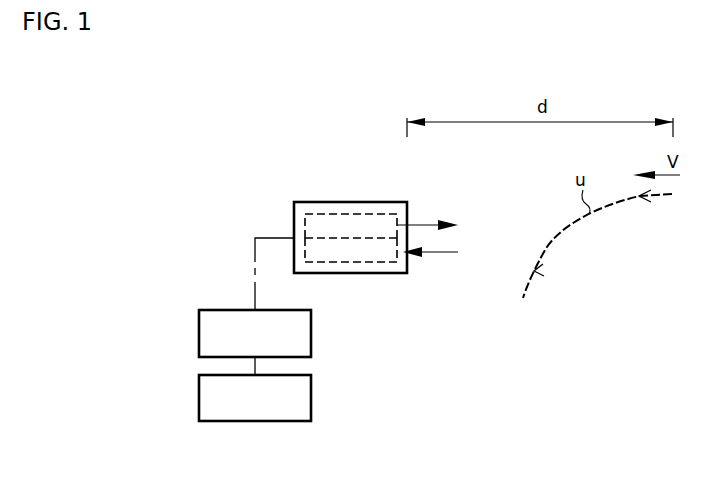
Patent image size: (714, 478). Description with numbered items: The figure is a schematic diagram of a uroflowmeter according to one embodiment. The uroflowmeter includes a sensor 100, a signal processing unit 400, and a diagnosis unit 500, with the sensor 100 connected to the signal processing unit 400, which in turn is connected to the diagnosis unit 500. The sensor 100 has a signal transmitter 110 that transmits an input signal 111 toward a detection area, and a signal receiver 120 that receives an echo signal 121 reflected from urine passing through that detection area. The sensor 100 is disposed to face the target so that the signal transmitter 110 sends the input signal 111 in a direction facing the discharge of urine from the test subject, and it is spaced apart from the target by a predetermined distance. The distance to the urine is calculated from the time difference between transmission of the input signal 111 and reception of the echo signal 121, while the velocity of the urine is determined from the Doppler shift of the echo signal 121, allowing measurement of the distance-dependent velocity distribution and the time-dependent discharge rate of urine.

The sensor 100 is at (312, 200).
The signal transmitter 110 is at (368, 214).
The input signal 111 is at (420, 223).
The signal receiver 120 is at (363, 262).
The echo signal 121 is at (445, 255).
The signal processing unit 400 is at (199, 333).
The diagnosis unit 500 is at (199, 398).